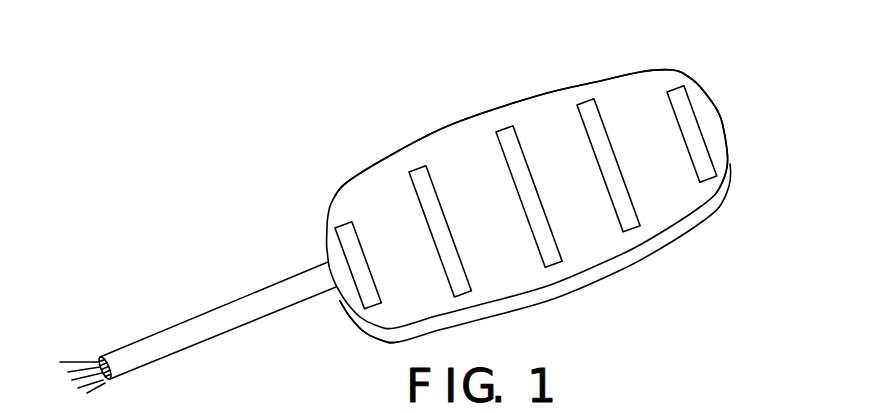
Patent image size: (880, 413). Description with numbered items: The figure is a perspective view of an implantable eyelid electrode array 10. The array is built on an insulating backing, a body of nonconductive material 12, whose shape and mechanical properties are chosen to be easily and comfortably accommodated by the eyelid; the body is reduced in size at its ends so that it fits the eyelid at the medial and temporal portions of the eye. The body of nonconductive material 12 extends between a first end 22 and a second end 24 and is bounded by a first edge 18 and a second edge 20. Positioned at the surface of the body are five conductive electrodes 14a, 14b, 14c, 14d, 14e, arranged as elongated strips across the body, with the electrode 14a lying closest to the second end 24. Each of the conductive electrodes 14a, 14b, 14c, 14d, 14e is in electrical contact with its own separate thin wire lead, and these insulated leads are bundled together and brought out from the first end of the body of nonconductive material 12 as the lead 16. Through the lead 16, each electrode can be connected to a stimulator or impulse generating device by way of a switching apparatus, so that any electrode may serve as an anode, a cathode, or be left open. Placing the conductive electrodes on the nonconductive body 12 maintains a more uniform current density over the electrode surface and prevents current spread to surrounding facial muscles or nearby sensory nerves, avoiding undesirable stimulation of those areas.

The implantable eyelid electrode array 10 is at (279, 111).
The body of nonconductive material 12 is at (429, 290).
The conductive electrode 14a is at (678, 90).
The conductive electrode 14b is at (588, 103).
The conductive electrode 14c is at (503, 128).
The conductive electrode 14d is at (412, 172).
The conductive electrode 14e is at (347, 219).
The lead 16 is at (188, 322).
The first edge 18 is at (455, 124).
The second edge 20 is at (610, 268).
The first end 22 is at (340, 300).
The second end 24 is at (718, 115).